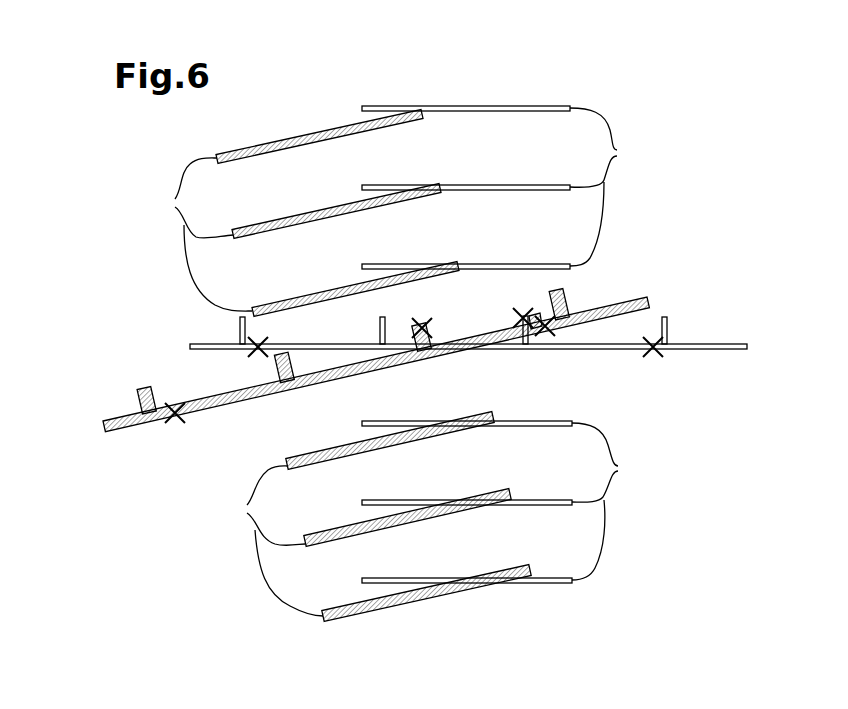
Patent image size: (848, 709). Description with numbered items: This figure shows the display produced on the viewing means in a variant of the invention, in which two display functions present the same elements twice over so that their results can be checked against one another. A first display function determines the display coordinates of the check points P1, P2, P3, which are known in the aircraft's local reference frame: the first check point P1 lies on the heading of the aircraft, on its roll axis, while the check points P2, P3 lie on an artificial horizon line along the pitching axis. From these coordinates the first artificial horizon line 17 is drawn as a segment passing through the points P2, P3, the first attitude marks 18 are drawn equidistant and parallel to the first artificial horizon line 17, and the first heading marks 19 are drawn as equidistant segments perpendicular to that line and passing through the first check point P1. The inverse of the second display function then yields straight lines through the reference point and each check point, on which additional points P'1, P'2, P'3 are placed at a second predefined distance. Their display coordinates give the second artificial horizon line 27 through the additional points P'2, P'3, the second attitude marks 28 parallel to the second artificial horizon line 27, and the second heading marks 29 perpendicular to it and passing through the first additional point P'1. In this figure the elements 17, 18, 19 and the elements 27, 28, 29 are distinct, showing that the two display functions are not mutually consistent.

The first artificial horizon line 17 is at (191, 345).
The first attitude marks 18 is at (507, 344).
The first heading marks 19 is at (239, 323).
The second artificial horizon line 27 is at (116, 421).
The second attitude marks 28 is at (336, 366).
The second heading marks 29 is at (145, 386).
The first check point P1 is at (523, 318).
The check point P2 is at (258, 351).
The check point P3 is at (653, 352).
The first additional point P'1 is at (452, 310).
The additional point P'2 is at (157, 451).
The additional point P'3 is at (578, 358).